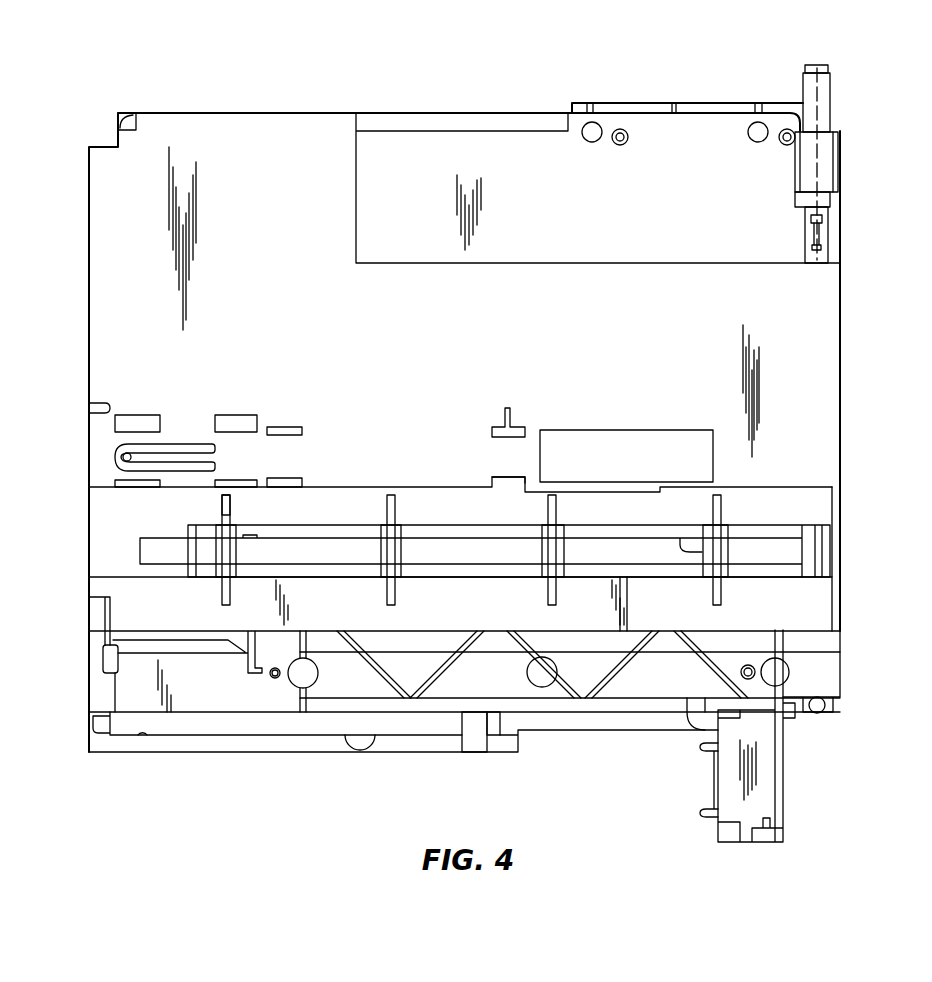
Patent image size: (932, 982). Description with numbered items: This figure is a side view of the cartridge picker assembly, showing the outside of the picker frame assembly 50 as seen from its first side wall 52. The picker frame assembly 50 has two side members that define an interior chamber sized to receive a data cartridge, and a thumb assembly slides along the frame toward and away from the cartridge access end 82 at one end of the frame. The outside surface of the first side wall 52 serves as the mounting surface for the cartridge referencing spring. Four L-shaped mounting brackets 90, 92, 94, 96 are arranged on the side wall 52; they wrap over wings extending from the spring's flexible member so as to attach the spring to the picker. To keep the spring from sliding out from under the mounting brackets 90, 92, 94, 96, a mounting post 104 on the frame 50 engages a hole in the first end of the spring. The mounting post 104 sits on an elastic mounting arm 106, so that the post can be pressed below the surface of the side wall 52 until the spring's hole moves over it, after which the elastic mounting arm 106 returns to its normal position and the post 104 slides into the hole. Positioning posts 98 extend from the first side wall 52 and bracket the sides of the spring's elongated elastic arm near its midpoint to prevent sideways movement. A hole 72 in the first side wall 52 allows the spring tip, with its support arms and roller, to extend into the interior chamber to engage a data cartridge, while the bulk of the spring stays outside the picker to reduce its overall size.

The picker frame assembly 50 is at (191, 106).
The first side wall 52 is at (380, 378).
The hole 72 is at (630, 430).
The cartridge access end 82 is at (841, 372).
The L-shaped mounting bracket 90 is at (140, 422).
The L-shaped mounting bracket 92 is at (138, 485).
The L-shaped mounting bracket 94 is at (237, 422).
The L-shaped mounting bracket 96 is at (237, 482).
The positioning posts 98 is at (505, 477).
The mounting post 104 is at (121, 457).
The elastic mounting arm 106 is at (182, 457).